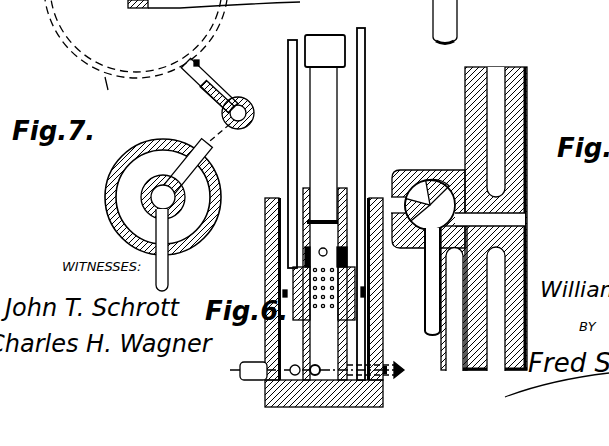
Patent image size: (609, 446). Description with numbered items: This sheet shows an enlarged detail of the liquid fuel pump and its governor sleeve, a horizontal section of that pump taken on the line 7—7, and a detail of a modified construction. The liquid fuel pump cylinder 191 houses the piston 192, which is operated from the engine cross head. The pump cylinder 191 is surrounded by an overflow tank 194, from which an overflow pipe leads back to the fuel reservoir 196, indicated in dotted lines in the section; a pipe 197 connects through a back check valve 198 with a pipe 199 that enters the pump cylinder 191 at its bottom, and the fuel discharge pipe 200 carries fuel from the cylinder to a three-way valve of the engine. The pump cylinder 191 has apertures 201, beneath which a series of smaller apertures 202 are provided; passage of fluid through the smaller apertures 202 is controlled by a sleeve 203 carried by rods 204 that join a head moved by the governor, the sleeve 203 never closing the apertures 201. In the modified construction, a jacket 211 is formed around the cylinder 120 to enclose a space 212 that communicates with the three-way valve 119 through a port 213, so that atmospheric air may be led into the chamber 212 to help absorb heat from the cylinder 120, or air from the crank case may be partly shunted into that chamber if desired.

In FIG. 6, the section line 7— 7 is at (312, 373).
In FIG. 8, the three-way valve 119 is at (431, 179).
In FIG. 8, the cylinder 120 is at (527, 100).
In FIG. 6, the liquid fuel pump cylinder 191 is at (288, 227).
In FIG. 7, the liquid fuel pump cylinder 191 is at (143, 181).
In FIG. 6, the piston 192 is at (315, 175).
In FIG. 6, the overflow tank 194 is at (279, 272).
In FIG. 7, the overflow tank 194 is at (108, 201).
In FIG. 7, the fuel reservoir 196 is at (136, 58).
In FIG. 7, the pipe 197 is at (205, 77).
In FIG. 7, the back check valve 198 is at (250, 88).
In FIG. 6, the pipe 199 is at (248, 362).
In FIG. 7, the pipe 199 is at (202, 138).
In FIG. 6, the fuel discharge pipe 200 is at (386, 374).
In FIG. 7, the fuel discharge pipe 200 is at (160, 273).
In FIG. 6, the apertures 201 is at (327, 248).
In FIG. 6, the smaller apertures 202 is at (322, 317).
In FIG. 6, the sleeve 203 is at (356, 307).
In FIG. 6, the rods 204 is at (295, 122).
In FIG. 8, the jacket 211 is at (470, 90).
In FIG. 8, the space 212 is at (497, 128).
In FIG. 8, the port 213 is at (482, 192).